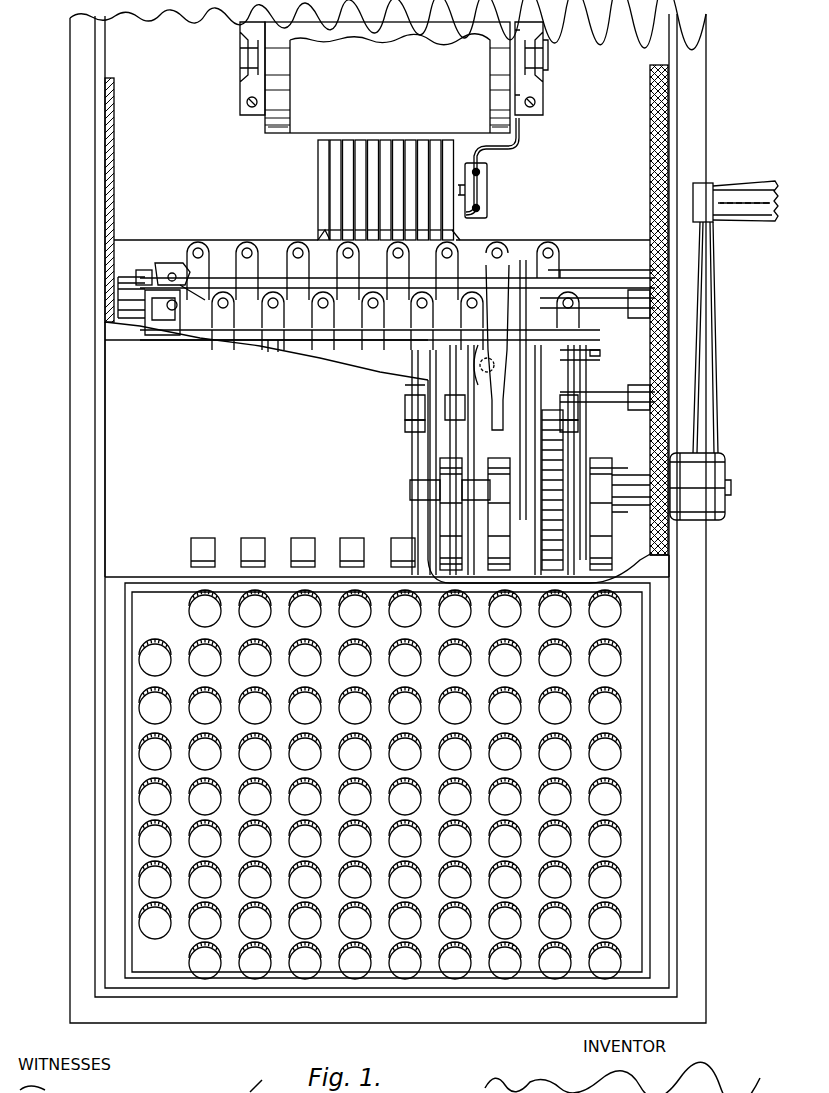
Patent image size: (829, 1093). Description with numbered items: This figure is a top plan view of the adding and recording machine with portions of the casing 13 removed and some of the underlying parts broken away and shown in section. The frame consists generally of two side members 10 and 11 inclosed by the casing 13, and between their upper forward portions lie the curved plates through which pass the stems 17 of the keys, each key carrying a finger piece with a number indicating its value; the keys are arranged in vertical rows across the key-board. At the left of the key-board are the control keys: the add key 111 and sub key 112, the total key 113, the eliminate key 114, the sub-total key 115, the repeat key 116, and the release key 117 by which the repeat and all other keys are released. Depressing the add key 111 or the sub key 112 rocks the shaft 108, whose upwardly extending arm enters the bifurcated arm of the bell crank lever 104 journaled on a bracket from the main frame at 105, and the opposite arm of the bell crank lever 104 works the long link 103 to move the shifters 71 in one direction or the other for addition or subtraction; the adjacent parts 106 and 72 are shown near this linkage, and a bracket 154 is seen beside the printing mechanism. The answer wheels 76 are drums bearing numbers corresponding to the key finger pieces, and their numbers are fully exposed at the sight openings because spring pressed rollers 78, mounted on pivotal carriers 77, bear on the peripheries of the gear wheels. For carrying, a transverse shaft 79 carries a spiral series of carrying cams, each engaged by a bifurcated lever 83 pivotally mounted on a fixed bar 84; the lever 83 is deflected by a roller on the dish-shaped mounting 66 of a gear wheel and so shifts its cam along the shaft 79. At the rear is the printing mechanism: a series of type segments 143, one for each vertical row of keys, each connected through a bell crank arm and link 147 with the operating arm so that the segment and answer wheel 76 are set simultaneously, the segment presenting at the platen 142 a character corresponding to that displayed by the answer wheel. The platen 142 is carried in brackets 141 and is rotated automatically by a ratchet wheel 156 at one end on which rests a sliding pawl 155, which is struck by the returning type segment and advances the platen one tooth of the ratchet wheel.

The side member 10 is at (120, 290).
The side member 11 is at (650, 430).
The casing 13 is at (113, 156).
The key stem 17 is at (613, 657).
The dish-shaped mounting 66 is at (553, 490).
The shifter 71 is at (370, 321).
The screw 72 is at (590, 356).
The answer wheel 76 is at (345, 548).
The pivotal carrier 77 is at (278, 352).
The spring pressed roller 78 is at (410, 426).
The transverse shaft 79 is at (622, 392).
The lever 83 is at (491, 336).
The fixed bar 84 is at (601, 262).
The long link 103 is at (263, 262).
The bell crank lever 104 is at (168, 272).
The bracket 105 is at (180, 278).
The arm 106 is at (160, 318).
The shaft 108 is at (597, 304).
The add key 111 is at (140, 658).
The sub key 112 is at (140, 707).
The total key 113 is at (140, 752).
The eliminate key 114 is at (140, 797).
The sub-total key 115 is at (140, 839).
The repeat key 116 is at (140, 880).
The REL key 117 is at (140, 921).
The platen bracket 141 is at (243, 77).
The platen 142 is at (387, 76).
The type segment 143 is at (365, 140).
The link 147 is at (322, 237).
The bracket 154 is at (488, 186).
The sliding pawl 155 is at (522, 153).
The ratchet wheel 156 is at (547, 52).